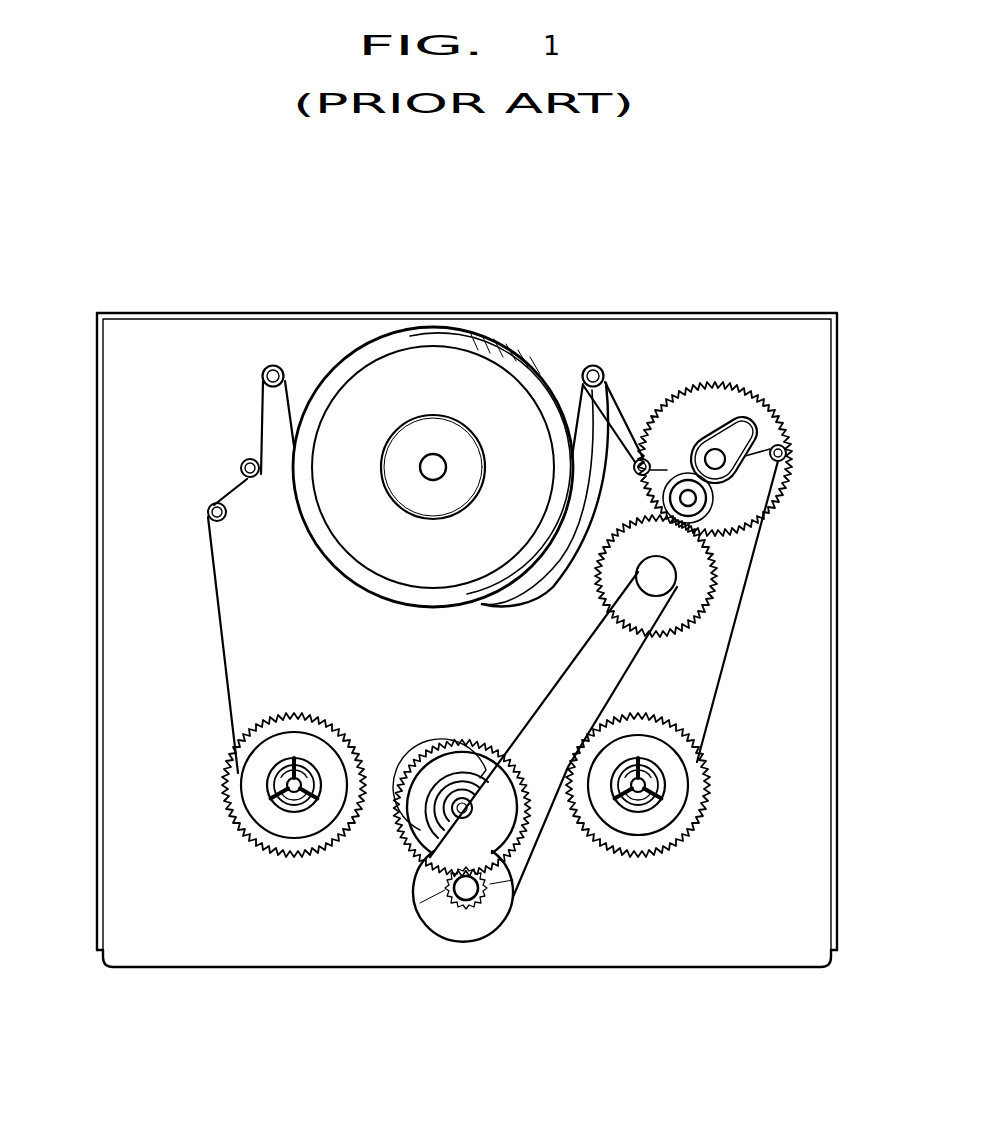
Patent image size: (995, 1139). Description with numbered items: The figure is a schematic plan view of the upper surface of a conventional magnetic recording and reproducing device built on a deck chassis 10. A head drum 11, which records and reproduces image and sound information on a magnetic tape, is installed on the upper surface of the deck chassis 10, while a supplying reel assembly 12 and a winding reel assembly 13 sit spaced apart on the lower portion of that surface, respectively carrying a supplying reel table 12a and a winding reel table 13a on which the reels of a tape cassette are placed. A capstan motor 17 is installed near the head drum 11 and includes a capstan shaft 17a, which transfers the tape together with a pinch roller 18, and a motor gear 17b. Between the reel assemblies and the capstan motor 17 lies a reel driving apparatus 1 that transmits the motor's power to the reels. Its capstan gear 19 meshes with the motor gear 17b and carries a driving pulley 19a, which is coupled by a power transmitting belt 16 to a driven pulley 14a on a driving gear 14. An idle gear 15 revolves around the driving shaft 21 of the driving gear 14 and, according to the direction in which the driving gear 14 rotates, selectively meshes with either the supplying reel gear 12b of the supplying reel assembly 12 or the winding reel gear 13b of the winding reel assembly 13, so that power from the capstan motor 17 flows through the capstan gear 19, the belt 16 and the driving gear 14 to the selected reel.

The reel driving apparatus 1 is at (455, 848).
The deck chassis 10 is at (97, 392).
The head drum 11 is at (425, 337).
The supplying reel assembly 12 is at (199, 867).
The supplying reel table 12a is at (268, 786).
The supplying reel gear 12b is at (303, 845).
The winding reel assembly 13 is at (730, 795).
The winding reel table 13a is at (663, 779).
The winding reel gear 13b is at (692, 828).
The driving gear 14 is at (435, 936).
The driven pulley 14a is at (468, 923).
The idle gear 15 is at (433, 750).
The power transmitting belt 16 is at (640, 661).
The capstan motor 17 is at (765, 398).
The capstan shaft 17a is at (715, 449).
The motor gear 17b is at (785, 410).
The pinch roller 18 is at (700, 503).
The capstan gear 19 is at (745, 576).
The driving pulley 19a is at (672, 570).
The driving shaft 21 is at (447, 892).